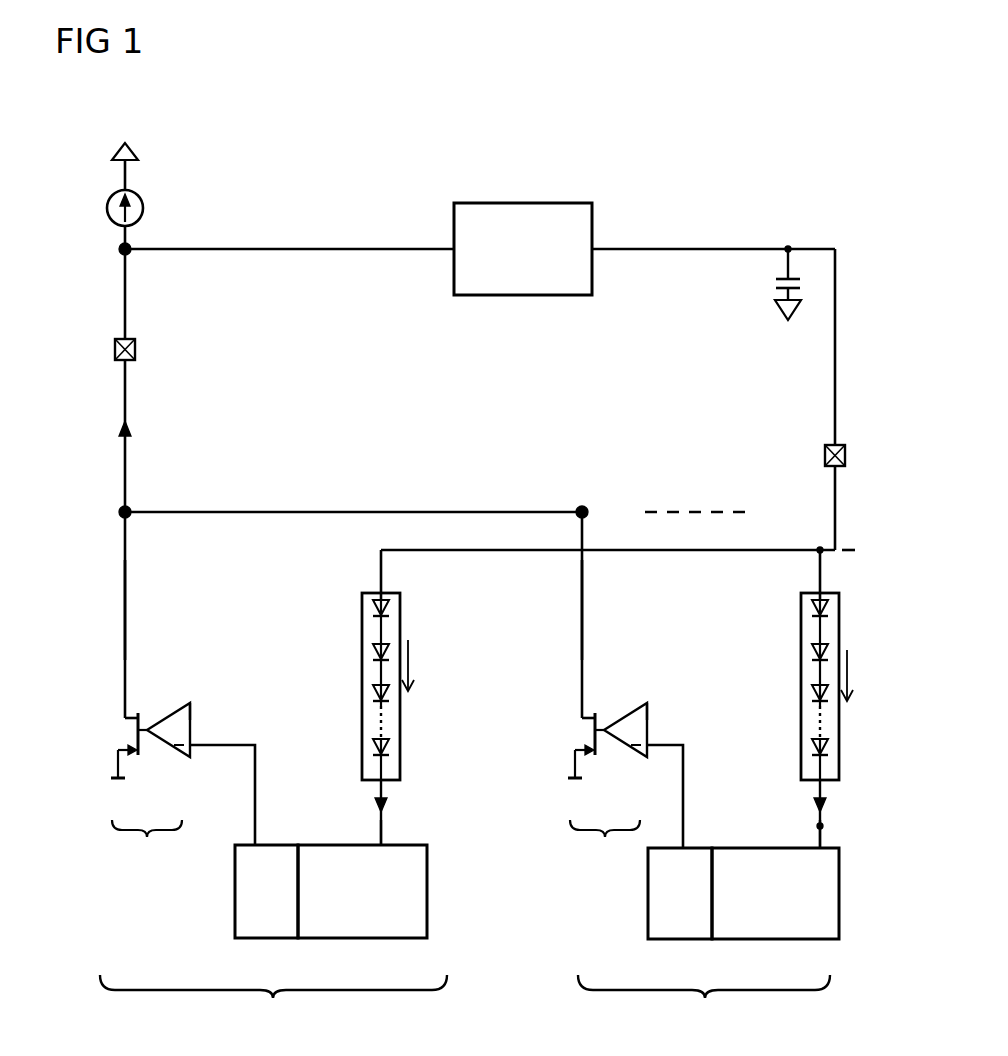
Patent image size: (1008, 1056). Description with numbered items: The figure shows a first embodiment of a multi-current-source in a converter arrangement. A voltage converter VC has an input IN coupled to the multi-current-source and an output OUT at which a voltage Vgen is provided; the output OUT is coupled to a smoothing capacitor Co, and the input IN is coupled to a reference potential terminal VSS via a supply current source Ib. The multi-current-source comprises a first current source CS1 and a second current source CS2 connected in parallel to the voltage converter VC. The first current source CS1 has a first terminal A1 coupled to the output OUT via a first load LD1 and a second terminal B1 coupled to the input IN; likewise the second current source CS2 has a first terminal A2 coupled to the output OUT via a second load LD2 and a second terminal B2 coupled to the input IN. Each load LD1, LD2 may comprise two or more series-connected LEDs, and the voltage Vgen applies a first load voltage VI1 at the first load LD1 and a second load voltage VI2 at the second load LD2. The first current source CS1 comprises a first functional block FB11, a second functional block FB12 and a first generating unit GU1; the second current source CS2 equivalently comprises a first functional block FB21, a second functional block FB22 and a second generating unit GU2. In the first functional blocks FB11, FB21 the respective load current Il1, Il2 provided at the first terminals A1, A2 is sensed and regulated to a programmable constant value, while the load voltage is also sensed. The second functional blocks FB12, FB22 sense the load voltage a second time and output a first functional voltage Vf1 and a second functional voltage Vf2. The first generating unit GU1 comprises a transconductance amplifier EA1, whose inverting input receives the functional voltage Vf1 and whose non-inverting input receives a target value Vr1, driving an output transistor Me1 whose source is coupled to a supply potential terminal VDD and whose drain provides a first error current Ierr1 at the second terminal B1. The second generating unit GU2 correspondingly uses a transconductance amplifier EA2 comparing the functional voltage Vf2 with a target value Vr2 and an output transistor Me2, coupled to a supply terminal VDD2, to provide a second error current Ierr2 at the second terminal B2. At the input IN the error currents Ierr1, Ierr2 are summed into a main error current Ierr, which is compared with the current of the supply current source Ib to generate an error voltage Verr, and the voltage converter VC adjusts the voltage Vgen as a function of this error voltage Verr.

The reference potential terminal VSS is at (150, 152).
The supply current source Ib is at (137, 208).
The error voltage Verr is at (286, 240).
The input IN is at (110, 349).
The main error current Ierr is at (145, 435).
The voltage converter VC is at (592, 210).
The voltage Vgen is at (713, 234).
The smoothing capacitor Co is at (803, 283).
The output OUT is at (806, 399).
The second terminal B1 is at (125, 593).
The second terminal B2 is at (582, 593).
The first error current Ierr1 is at (152, 640).
The second error current Ierr2 is at (609, 640).
The output transistor Me1 is at (117, 745).
The output transistor Me2 is at (566, 745).
The transconductance amplifier EA1 is at (165, 713).
The transconductance amplifier EA2 is at (622, 713).
The target value Vr1 is at (210, 712).
The second target value Vr2 is at (667, 712).
The first functional voltage Vf1 is at (226, 783).
The second functional voltage Vf2 is at (673, 785).
The supply potential terminal VDD is at (116, 795).
The positive supply terminal VDD2 is at (571, 795).
The first generating unit GU1 is at (147, 846).
The second generating unit GU2 is at (605, 845).
The first load LD1 is at (362, 668).
The second load LD2 is at (801, 668).
The first load voltage VI1 is at (427, 665).
The second load voltage VI2 is at (866, 675).
The first load current Il1 is at (395, 812).
The load current Il2 is at (834, 814).
The first terminal A1 is at (381, 829).
The first terminal A2 is at (823, 828).
The first functional block FB11 is at (343, 940).
The second functional block FB12 is at (235, 905).
The first functional block FB21 is at (745, 941).
The second functional block FB22 is at (648, 905).
The first current source CS1 is at (273, 1001).
The second current source CS2 is at (704, 1001).